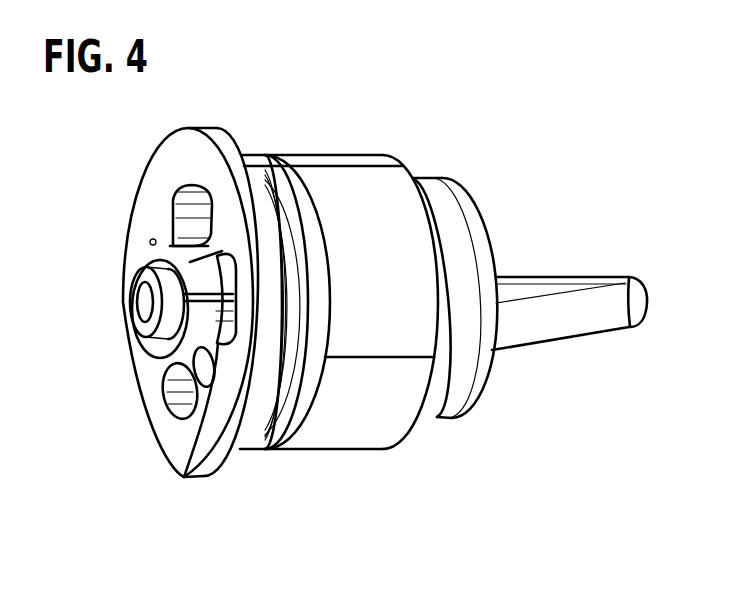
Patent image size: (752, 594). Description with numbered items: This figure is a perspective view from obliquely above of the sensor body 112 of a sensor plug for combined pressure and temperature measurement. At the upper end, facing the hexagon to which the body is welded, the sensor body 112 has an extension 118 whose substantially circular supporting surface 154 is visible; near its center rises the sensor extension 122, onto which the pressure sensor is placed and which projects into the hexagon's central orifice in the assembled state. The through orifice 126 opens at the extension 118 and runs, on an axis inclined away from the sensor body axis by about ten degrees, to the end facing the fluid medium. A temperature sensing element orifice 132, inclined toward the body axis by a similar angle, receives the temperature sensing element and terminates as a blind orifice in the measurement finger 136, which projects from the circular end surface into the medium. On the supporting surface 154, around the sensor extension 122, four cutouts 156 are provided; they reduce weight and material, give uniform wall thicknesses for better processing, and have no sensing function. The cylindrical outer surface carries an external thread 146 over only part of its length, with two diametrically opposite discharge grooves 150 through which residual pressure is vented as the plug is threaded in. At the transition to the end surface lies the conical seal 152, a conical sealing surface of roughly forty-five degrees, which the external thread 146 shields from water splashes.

The sensor body 112 is at (313, 113).
The extension 118 is at (238, 448).
The sensor extension 122 is at (155, 345).
The through orifice 126 is at (145, 300).
The temperature sensing element orifice 132 is at (187, 466).
The measurement finger 136 is at (593, 320).
The external thread 146 is at (362, 155).
The discharge grooves 150 is at (345, 412).
The conical seal 152 is at (487, 257).
The supporting surface 154 is at (177, 440).
The cutouts 156 is at (225, 271).